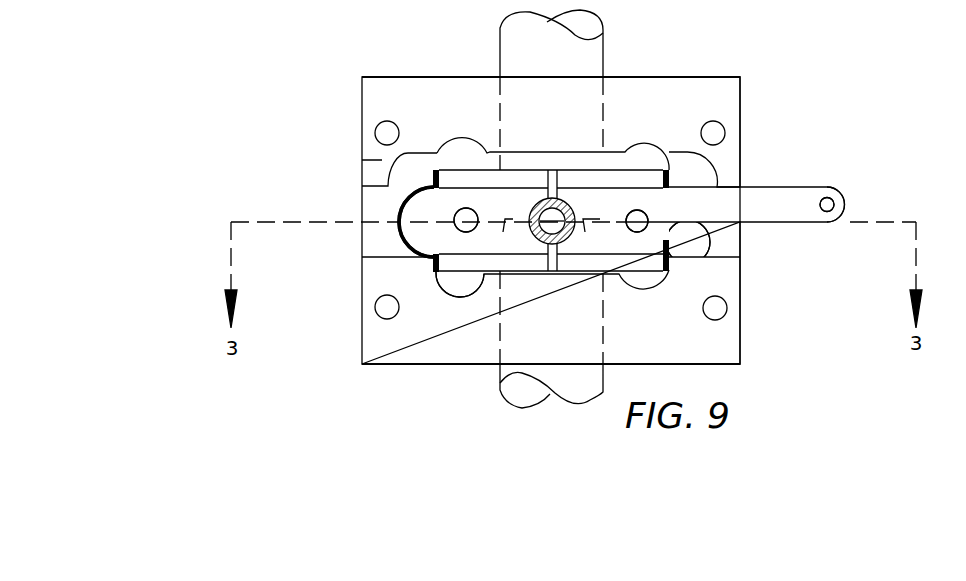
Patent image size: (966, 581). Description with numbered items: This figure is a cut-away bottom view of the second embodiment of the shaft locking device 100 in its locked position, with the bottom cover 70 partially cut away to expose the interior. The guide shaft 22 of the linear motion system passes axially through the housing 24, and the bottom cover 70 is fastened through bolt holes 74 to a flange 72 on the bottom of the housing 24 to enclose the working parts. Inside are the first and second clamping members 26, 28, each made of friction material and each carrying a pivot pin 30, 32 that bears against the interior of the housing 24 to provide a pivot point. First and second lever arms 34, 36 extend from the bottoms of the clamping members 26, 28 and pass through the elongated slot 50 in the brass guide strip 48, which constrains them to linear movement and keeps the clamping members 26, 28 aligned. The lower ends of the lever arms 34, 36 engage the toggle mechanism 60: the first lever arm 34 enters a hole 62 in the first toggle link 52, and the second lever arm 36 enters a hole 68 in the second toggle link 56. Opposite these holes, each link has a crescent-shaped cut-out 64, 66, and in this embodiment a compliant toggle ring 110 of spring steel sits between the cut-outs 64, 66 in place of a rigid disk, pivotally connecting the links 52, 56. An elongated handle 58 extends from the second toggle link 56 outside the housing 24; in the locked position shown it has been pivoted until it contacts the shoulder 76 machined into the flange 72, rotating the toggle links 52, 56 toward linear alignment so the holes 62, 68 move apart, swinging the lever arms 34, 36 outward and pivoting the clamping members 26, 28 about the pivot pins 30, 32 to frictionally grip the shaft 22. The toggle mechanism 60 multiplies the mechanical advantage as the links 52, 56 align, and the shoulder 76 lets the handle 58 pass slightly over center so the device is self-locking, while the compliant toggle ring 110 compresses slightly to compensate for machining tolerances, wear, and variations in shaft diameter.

The guide shaft 22 is at (587, 55).
The housing 24 is at (735, 284).
The first clamping member 26 is at (460, 183).
The second clamping member 28 is at (642, 175).
The pivot pin 30 is at (435, 259).
The pivot pin 32 is at (670, 265).
The first lever arm 34 is at (455, 226).
The second lever arm 36 is at (642, 213).
The guide strip 48 is at (398, 207).
The elongated slot 50 is at (552, 220).
The first toggle link 52 is at (472, 243).
The second toggle link 56 is at (645, 248).
The elongated handle 58 is at (822, 187).
The toggle mechanism 60 is at (378, 217).
The hole 62 is at (473, 217).
The crescent-shaped cut-out 64 is at (500, 236).
The crescent-shaped cut-out 66 is at (596, 235).
The hole 68 is at (628, 215).
The bottom cover 70 is at (697, 93).
The flange 72 is at (728, 347).
The bolt holes 74 is at (387, 134).
The shoulder 76 is at (740, 173).
The shaft locking device 100 is at (754, 101).
The compliant toggle ring 110 is at (555, 245).